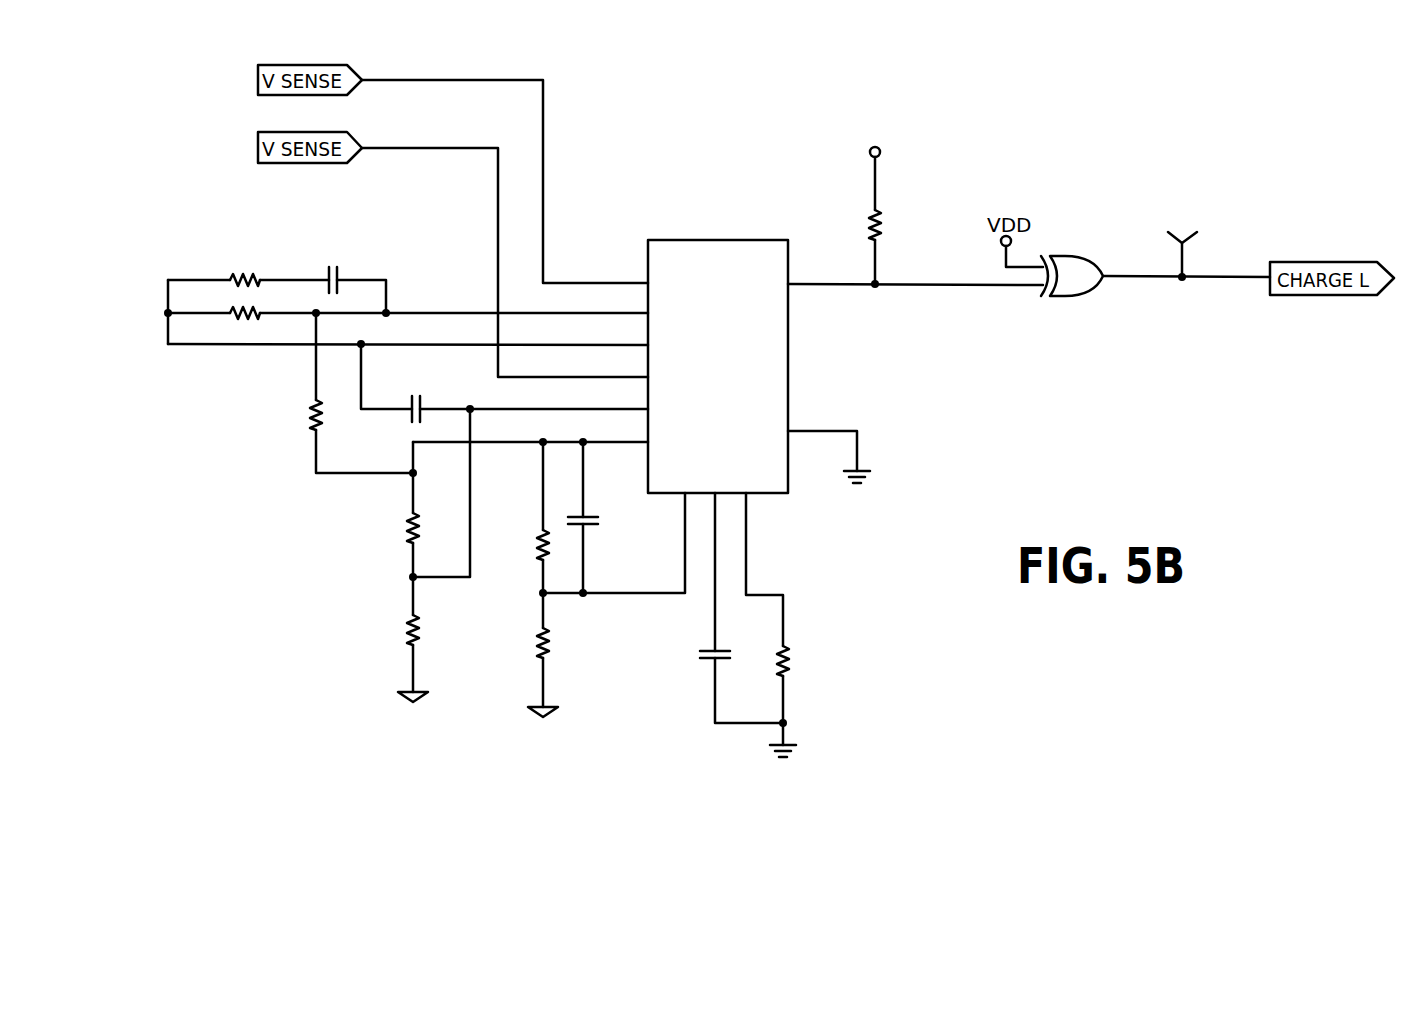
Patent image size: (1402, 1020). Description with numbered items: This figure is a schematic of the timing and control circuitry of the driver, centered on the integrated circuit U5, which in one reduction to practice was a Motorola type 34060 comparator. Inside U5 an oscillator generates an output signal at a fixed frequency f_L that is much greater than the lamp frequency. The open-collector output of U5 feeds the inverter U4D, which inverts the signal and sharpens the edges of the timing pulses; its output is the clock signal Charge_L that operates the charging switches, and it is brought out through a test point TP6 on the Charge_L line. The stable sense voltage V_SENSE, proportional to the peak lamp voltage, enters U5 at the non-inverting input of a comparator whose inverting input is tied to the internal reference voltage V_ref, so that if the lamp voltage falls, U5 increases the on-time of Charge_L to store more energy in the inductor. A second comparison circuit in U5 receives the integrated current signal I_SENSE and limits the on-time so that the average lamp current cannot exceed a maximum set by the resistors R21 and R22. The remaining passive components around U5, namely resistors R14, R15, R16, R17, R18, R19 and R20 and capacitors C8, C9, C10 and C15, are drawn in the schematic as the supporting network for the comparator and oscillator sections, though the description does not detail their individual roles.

The resistor R14 is at (523, 535).
The resistor R15 is at (527, 672).
The resistor R16 is at (790, 619).
The pull-up resistor R17 is at (891, 203).
The resistor R18 is at (248, 266).
The resistor R19 is at (408, 322).
The resistor R20 is at (340, 393).
The resistor R21 is at (394, 528).
The resistor R22 is at (398, 658).
The capacitor C8 is at (353, 278).
The timing capacitor C9 is at (721, 608).
The capacitor C10 is at (605, 517).
The capacitor C15 is at (504, 383).
The integrated circuit U5 is at (722, 375).
The inverter U4D is at (1076, 271).
The test point TP6 is at (1184, 231).